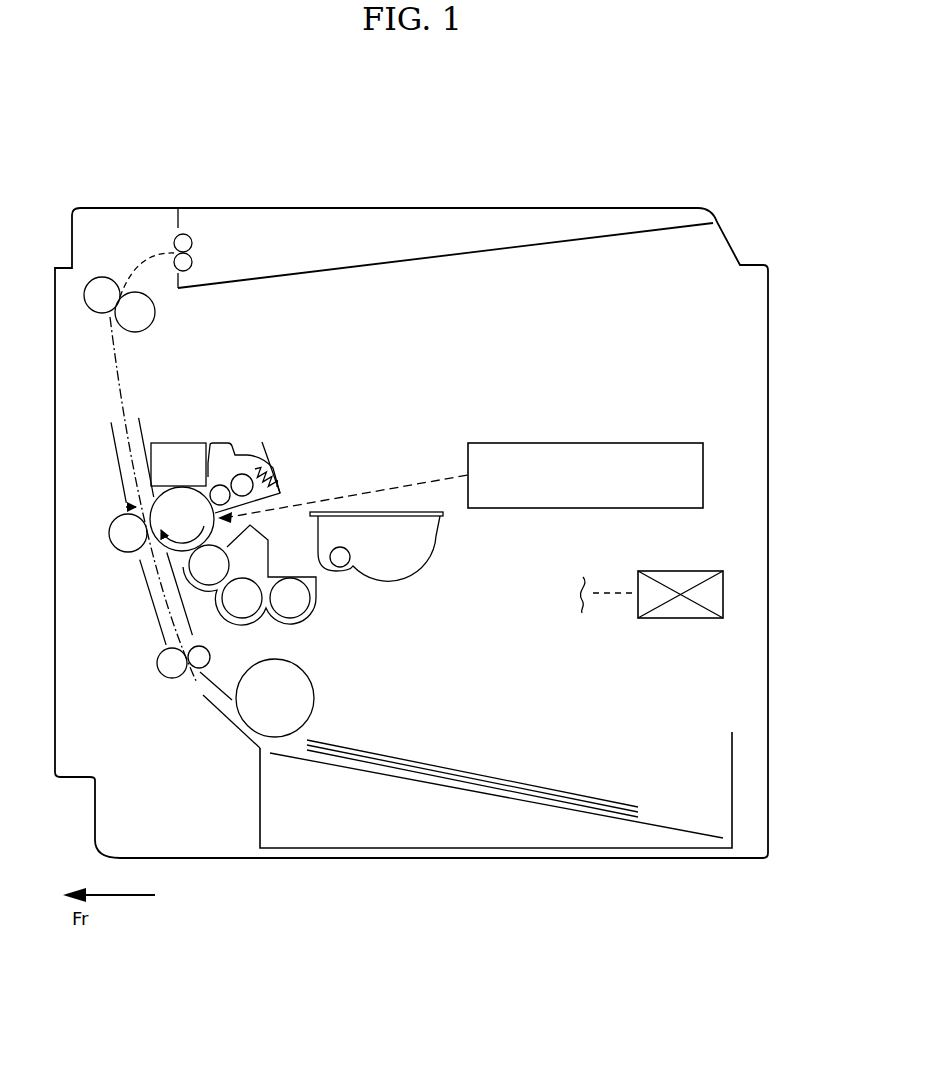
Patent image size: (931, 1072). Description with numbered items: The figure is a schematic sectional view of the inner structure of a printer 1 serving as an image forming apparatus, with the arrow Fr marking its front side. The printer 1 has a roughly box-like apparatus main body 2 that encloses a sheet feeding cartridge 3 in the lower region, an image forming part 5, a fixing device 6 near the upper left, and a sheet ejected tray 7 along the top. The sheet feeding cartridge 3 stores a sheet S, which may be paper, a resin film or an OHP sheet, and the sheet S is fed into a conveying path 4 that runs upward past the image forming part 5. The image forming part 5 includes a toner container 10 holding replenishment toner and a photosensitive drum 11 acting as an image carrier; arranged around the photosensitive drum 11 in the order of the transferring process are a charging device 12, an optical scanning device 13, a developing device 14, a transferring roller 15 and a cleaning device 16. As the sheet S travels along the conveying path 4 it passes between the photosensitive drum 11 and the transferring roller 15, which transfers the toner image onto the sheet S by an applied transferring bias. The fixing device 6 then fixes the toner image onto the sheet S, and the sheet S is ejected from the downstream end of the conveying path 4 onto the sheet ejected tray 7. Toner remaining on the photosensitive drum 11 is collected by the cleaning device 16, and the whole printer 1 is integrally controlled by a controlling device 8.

The printer 1 is at (410, 126).
The apparatus main body 2 is at (745, 263).
The sheet feeding cartridge 3 is at (732, 767).
The conveying path 4 is at (200, 685).
The image forming part 5 is at (308, 476).
The fixing device 6 is at (143, 281).
The sheet ejected tray 7 is at (475, 255).
The controlling device 8 is at (684, 618).
The toner container 10 is at (418, 575).
The photosensitive drum 11 is at (212, 537).
The charging device 12 is at (242, 455).
The optical scanning device 13 is at (588, 443).
The developing device 14 is at (320, 590).
The transferring roller 15 is at (130, 557).
The cleaning device 16 is at (178, 443).
The sheet S is at (487, 776).